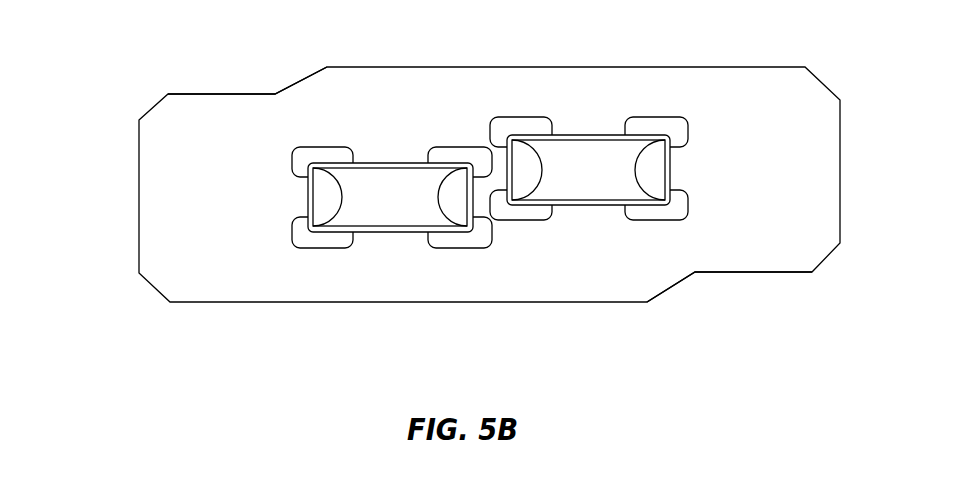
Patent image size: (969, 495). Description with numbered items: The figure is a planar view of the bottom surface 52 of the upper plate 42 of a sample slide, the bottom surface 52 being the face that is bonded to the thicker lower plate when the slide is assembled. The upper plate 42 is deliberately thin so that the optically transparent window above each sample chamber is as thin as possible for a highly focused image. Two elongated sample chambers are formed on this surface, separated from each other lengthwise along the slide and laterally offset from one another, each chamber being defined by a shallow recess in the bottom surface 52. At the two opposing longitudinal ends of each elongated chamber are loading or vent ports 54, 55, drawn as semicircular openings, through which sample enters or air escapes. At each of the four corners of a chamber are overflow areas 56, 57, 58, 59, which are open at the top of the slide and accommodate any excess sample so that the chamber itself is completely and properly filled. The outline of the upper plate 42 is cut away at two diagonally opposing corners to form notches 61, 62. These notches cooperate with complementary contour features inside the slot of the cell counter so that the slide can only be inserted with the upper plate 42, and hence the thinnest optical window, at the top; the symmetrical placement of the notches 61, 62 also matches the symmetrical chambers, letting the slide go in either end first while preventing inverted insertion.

The upper plate 42 is at (452, 187).
The bottom surface 52 is at (754, 130).
The loading or vent port 54 is at (345, 205).
The loading or vent port 55 is at (437, 207).
The overflow area 56 is at (325, 250).
The overflow area 57 is at (338, 153).
The overflow area 58 is at (460, 250).
The overflow area 59 is at (457, 153).
The notch 61 is at (713, 289).
The notch 62 is at (266, 80).